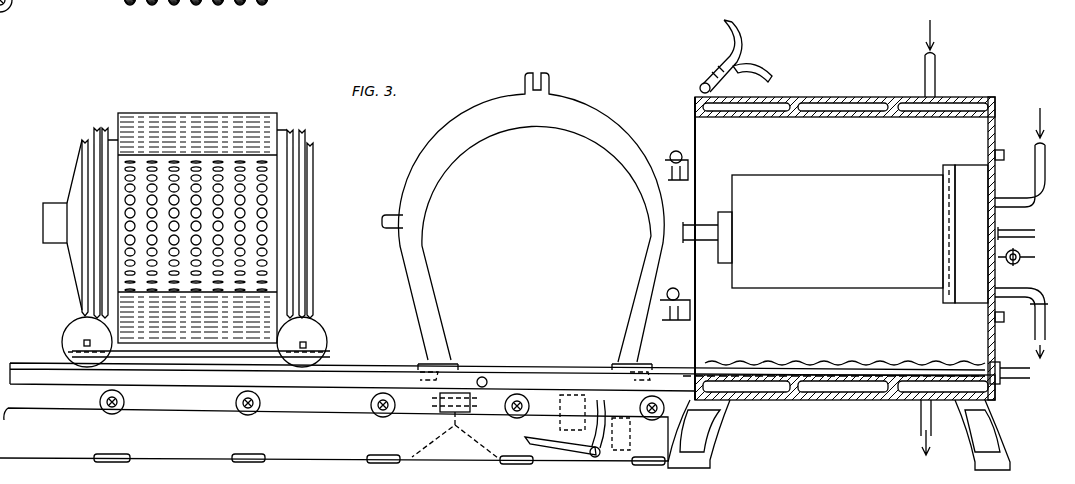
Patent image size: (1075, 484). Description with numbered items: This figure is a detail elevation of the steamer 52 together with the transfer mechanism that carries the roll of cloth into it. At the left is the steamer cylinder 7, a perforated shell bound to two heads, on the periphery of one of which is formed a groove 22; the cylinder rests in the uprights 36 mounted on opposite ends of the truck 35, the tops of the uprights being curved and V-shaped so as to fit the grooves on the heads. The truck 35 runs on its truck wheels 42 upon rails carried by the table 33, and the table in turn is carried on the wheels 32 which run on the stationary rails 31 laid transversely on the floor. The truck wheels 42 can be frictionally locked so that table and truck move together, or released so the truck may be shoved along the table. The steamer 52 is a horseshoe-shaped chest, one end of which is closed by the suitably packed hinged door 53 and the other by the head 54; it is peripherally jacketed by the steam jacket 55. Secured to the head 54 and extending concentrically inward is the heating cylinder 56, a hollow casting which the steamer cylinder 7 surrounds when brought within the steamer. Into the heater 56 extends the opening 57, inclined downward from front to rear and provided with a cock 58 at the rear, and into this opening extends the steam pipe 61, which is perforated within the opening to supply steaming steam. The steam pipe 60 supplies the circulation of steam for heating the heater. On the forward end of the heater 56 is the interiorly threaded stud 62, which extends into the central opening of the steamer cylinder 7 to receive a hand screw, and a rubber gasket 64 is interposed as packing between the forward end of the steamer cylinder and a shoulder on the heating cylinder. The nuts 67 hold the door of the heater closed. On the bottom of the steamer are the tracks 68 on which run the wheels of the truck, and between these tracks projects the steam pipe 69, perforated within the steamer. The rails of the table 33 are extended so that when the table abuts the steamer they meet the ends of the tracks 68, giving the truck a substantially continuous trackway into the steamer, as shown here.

The steamer cylinder 7 is at (196, 145).
The groove 22 is at (97, 128).
The rails 31 is at (334, 429).
The wheels 32 is at (262, 403).
The table 33 is at (497, 377).
The truck 35 is at (188, 353).
The uprights 36 is at (305, 322).
The truck wheels 42 is at (196, 337).
The steamer 52 is at (882, 396).
The hinged door 53 is at (536, 230).
The head 54 is at (996, 340).
The steam jacket 55 is at (776, 388).
The heating cylinder 56 is at (830, 231).
The opening 57 is at (1046, 180).
The cock 58 is at (1036, 258).
The steam pipe 60 is at (1047, 328).
The steam pipe 61 is at (1036, 232).
The interiorly threaded stud 62 is at (700, 222).
The rubber gasket 64 is at (944, 300).
The nuts 67 is at (736, 50).
The tracks 68 is at (706, 370).
The steam pipe 69 is at (1030, 376).